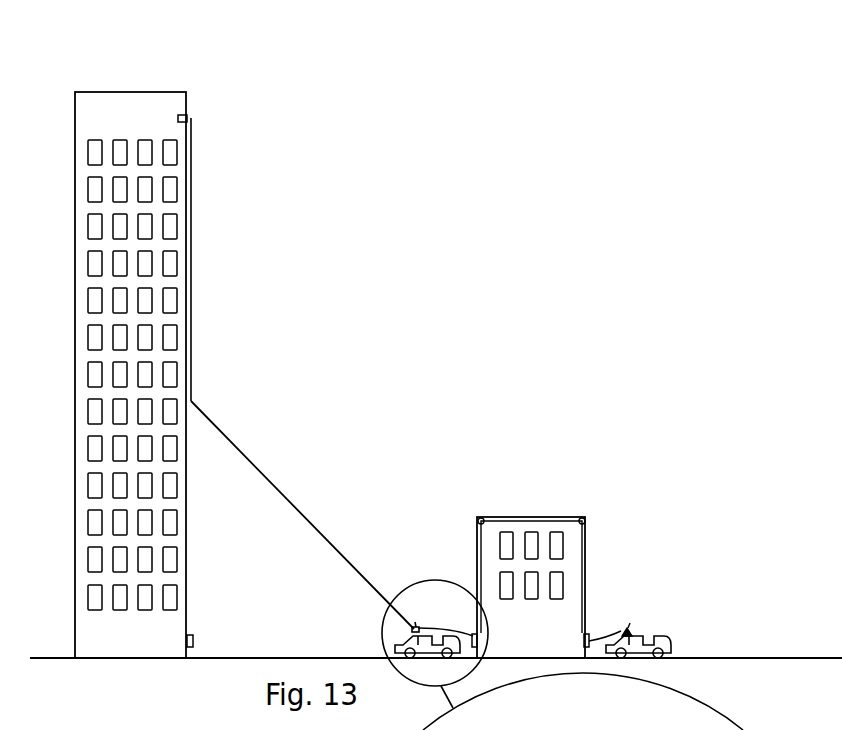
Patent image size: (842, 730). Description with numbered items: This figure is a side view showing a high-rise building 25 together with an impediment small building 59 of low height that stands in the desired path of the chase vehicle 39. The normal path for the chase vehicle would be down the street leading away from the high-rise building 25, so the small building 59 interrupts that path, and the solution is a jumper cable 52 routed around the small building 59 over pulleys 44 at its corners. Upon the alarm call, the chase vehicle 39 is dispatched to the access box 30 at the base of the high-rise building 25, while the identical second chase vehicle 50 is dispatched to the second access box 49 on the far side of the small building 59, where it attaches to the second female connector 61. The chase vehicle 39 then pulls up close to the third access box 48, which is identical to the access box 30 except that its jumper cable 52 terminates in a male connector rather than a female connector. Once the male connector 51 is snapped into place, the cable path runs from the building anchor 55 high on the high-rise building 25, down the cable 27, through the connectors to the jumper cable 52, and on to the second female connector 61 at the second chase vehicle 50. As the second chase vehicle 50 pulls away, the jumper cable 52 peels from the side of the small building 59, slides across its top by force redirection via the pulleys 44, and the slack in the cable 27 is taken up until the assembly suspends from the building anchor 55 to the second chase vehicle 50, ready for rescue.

The high-rise building 25 is at (107, 112).
The building anchor 55 is at (190, 116).
The cable 27 is at (243, 452).
The access box 30 is at (194, 634).
The small building 59 is at (492, 546).
The jumper cable 52 is at (618, 629).
The pulleys 44 is at (478, 519).
The third access box 48 is at (471, 637).
The second access box 49 is at (588, 633).
The chase vehicle 39 is at (396, 647).
The second chase vehicle 50 is at (668, 637).
The second female connector 61 is at (628, 630).
The male connector 51 is at (551, 728).